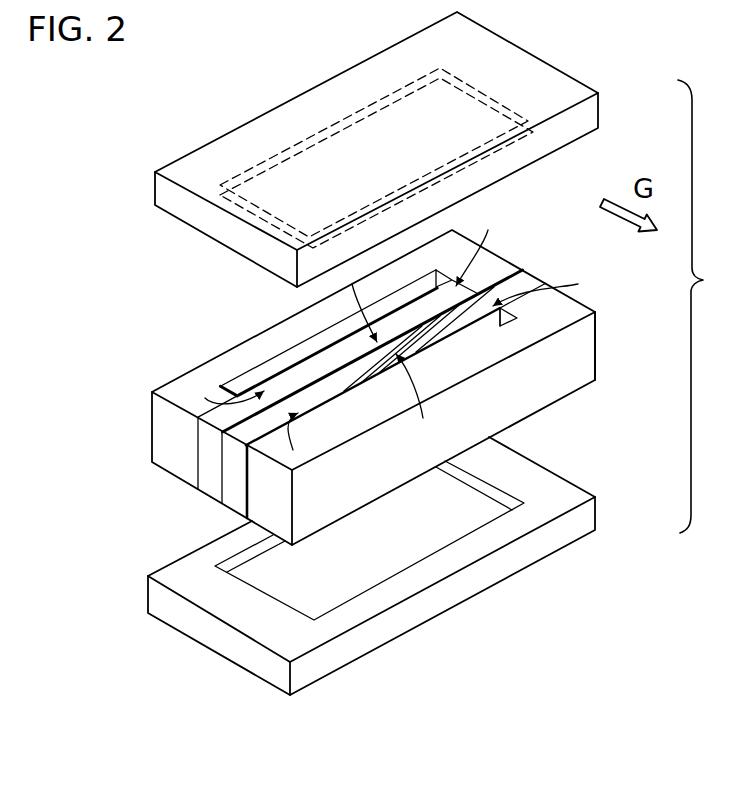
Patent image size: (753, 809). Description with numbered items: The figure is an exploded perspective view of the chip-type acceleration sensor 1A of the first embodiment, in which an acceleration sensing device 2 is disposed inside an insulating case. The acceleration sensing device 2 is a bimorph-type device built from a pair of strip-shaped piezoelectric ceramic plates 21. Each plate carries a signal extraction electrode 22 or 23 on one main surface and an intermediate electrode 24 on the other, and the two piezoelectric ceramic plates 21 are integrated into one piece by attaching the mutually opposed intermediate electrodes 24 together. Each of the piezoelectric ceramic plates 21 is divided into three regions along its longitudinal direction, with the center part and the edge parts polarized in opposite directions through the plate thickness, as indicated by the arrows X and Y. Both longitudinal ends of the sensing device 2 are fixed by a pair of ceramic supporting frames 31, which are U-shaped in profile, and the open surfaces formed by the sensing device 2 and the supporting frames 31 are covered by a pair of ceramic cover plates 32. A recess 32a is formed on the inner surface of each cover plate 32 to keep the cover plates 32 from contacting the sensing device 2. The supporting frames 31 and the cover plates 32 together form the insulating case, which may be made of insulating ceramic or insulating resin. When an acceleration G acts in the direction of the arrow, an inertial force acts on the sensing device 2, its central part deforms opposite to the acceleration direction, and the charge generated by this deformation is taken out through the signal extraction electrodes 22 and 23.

The acceleration sensor 1A is at (710, 306).
The acceleration sensing device 2 is at (528, 265).
The piezoelectric ceramic plate 21 is at (228, 489).
The signal extraction electrode 22 is at (463, 340).
The signal extraction electrode 23 is at (245, 358).
The intermediate electrode 24 is at (320, 352).
The ceramic supporting frame 31 is at (180, 377).
The ceramic cover plate 32 is at (236, 133).
The recess 32a is at (327, 118).